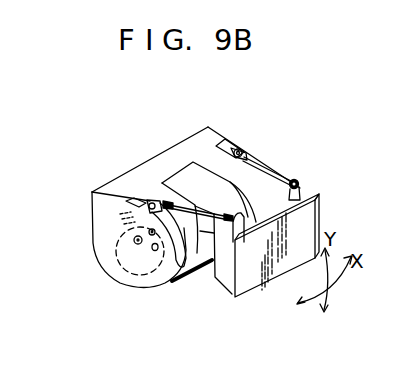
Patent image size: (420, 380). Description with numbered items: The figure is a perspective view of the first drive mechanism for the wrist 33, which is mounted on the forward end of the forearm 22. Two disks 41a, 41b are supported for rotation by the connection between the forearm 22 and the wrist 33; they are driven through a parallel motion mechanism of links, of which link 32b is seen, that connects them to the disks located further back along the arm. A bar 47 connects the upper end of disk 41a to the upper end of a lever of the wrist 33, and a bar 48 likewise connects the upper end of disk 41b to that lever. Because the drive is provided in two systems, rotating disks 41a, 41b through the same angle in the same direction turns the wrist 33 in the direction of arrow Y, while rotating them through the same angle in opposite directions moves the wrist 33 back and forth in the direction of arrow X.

The forearm 22 is at (196, 142).
The link 32b is at (131, 228).
The wrist 33 is at (221, 287).
The disk 41a is at (239, 148).
The disk 41b is at (138, 168).
The bar 47 is at (292, 179).
The bar 48 is at (198, 253).